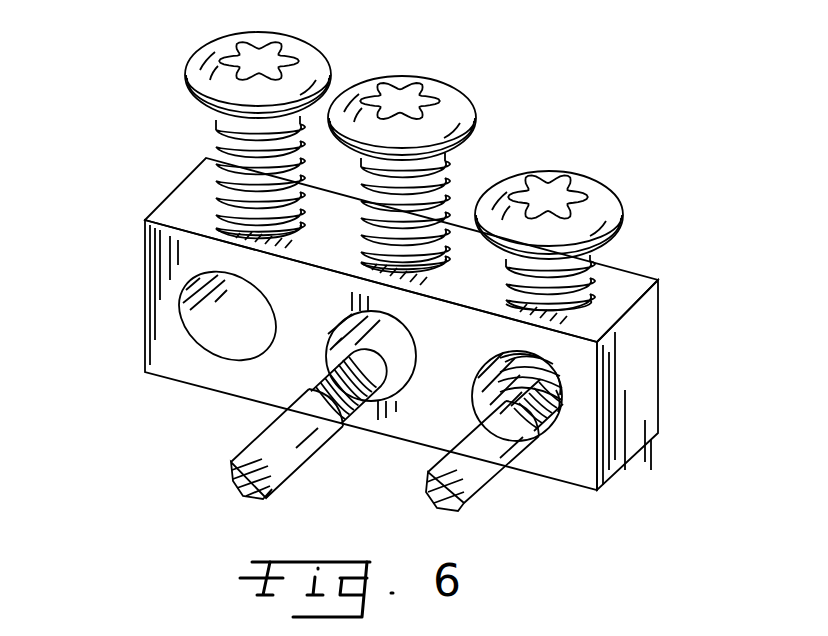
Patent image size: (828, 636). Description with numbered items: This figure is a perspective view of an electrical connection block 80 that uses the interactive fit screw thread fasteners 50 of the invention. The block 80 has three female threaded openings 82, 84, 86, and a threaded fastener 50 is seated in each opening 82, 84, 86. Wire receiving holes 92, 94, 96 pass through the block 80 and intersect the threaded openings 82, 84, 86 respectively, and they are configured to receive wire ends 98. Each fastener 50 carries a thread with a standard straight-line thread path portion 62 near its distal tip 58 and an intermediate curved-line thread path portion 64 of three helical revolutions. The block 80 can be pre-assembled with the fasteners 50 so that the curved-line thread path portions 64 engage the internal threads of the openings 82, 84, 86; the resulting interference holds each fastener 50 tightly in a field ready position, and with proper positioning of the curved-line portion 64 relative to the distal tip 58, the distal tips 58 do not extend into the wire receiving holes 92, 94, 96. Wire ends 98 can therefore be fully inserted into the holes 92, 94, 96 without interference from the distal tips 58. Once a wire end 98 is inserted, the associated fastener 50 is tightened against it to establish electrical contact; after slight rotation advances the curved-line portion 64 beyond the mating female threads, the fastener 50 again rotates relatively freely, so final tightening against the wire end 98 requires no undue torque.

The fastener 50 is at (316, 40).
The distal tip 58 is at (563, 393).
The straight-line thread path portion 62 is at (557, 380).
The curved-line thread path portion 64 is at (533, 357).
The electrical connection block 80 is at (143, 250).
The female threaded opening 82 is at (222, 219).
The female threaded opening 84 is at (445, 262).
The female threaded opening 86 is at (618, 318).
The wire receiving hole 92 is at (210, 308).
The wire receiving hole 94 is at (327, 353).
The wire receiving hole 96 is at (480, 400).
The wire end 98 is at (340, 410).